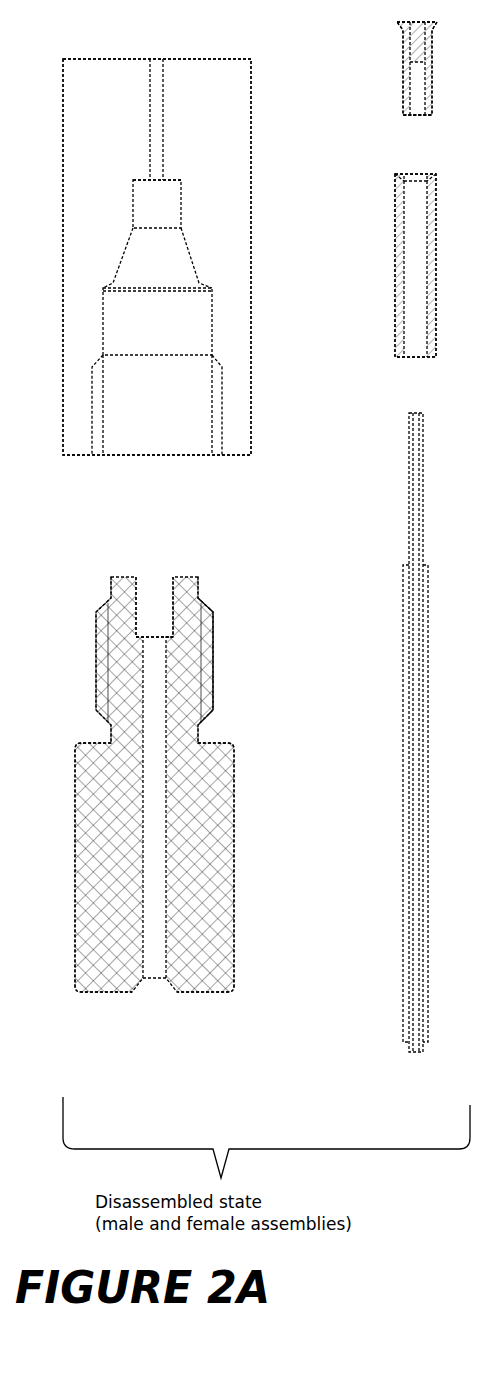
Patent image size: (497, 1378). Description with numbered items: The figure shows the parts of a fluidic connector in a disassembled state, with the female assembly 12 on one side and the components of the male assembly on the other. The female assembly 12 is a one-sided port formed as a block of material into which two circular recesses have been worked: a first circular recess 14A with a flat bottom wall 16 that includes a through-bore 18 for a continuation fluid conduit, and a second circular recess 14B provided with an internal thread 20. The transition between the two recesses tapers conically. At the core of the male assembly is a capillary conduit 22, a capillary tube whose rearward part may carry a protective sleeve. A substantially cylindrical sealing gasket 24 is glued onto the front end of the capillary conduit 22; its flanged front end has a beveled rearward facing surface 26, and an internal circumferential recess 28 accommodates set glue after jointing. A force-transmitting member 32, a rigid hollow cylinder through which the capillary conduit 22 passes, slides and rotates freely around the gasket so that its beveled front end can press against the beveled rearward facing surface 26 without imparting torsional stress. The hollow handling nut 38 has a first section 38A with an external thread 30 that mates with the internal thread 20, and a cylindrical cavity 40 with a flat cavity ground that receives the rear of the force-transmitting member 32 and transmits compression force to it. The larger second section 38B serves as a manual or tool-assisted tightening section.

The female assembly 12 is at (269, 53).
The through-bore 18 is at (157, 63).
The first circular recess 14A is at (157, 234).
The flat bottom wall 16 is at (170, 186).
The second circular recess 14B is at (157, 321).
The internal thread 20 is at (216, 451).
The sealing gasket 24 is at (386, 75).
The beveled rearward facing surface 26 is at (432, 29).
The internal circumferential recess 28 is at (410, 112).
The force-transmitting member 32 is at (428, 265).
The capillary conduit 22 is at (427, 732).
The hollow handling nut 38 is at (257, 1000).
The first section 38A is at (154, 660).
The second section 38B is at (154, 867).
The cylindrical cavity 40 is at (144, 588).
The external thread 30 is at (205, 628).